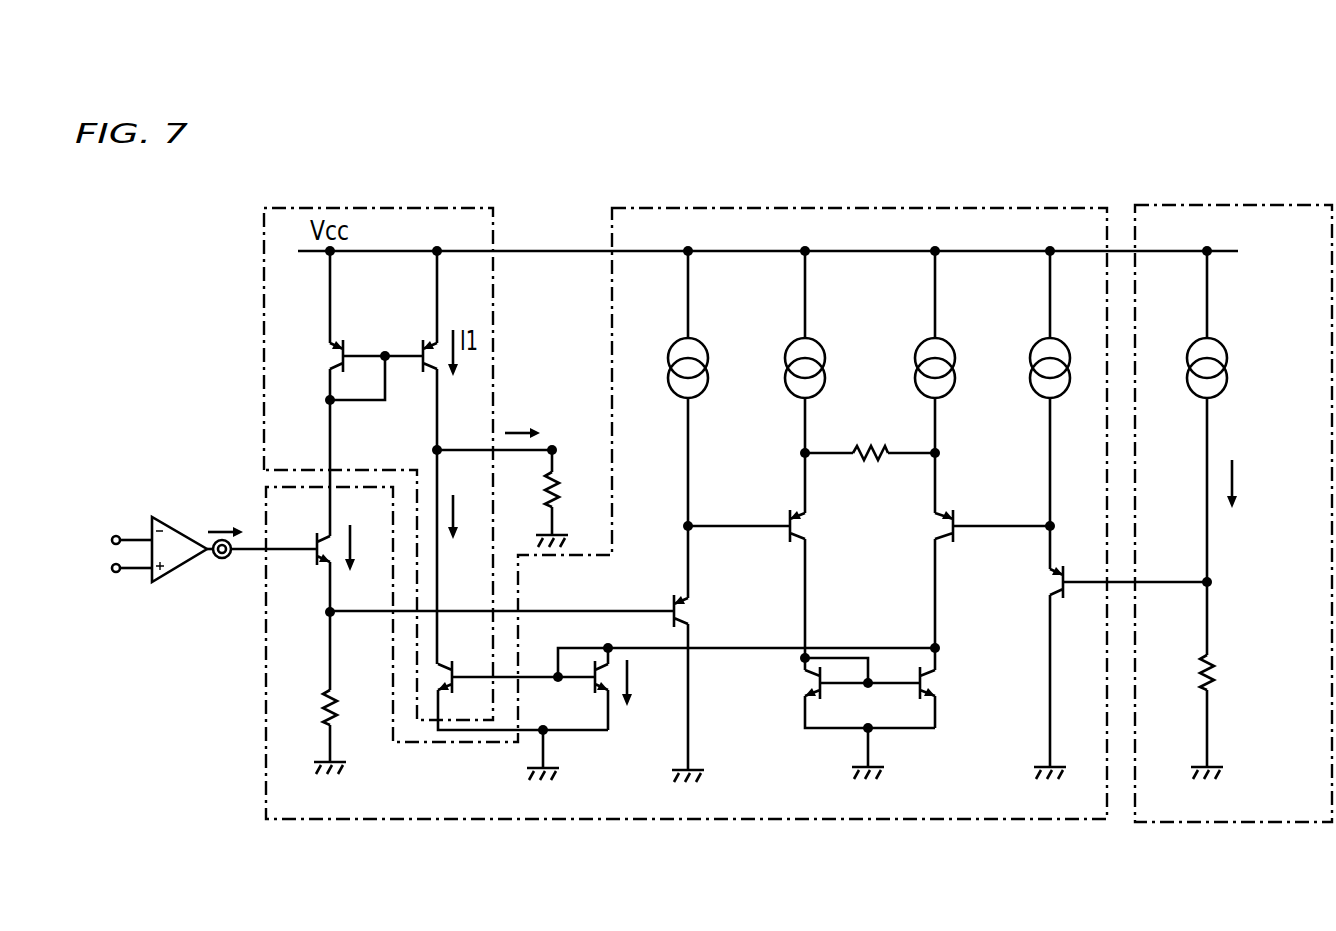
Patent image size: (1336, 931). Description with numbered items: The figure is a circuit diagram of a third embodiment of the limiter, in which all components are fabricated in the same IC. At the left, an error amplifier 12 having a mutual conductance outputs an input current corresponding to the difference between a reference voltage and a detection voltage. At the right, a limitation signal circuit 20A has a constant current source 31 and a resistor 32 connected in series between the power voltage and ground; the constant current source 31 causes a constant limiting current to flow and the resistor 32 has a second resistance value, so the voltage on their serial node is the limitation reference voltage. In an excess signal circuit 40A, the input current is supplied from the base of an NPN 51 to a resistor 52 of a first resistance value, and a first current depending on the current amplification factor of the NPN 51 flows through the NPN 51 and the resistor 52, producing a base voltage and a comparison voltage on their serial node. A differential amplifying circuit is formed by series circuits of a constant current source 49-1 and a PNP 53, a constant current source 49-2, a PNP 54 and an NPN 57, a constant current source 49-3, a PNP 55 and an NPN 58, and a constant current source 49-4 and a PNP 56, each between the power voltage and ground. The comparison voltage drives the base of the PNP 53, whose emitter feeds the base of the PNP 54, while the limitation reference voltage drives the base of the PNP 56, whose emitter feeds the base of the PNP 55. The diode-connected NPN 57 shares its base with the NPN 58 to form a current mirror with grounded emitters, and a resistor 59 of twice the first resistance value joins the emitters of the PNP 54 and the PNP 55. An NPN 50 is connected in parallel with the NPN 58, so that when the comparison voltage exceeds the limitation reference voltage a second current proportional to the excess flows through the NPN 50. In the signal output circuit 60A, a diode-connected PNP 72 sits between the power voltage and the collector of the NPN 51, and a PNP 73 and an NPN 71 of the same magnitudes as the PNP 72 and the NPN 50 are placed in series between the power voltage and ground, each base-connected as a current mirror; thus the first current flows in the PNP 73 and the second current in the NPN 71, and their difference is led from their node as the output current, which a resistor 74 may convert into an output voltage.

The error amplifier 12 is at (165, 527).
The limitation signal circuit 20A is at (1243, 205).
The constant current source 31 is at (1222, 343).
The resistor 32 is at (1214, 674).
The excess signal circuit 40A is at (880, 208).
The constant current source 49-1 is at (702, 343).
The constant current source 49-2 is at (818, 343).
The constant current source 49-3 is at (948, 343).
The constant current source 49-4 is at (1060, 343).
The NPN 50 is at (595, 690).
The NPN 51 is at (317, 535).
The resistor 52 is at (336, 708).
The PNP 53 is at (674, 618).
The PNP 54 is at (790, 543).
The PNP 55 is at (953, 543).
The PNP 56 is at (1063, 598).
The NPN 57 is at (818, 694).
The NPN 58 is at (935, 693).
The resistor 59 is at (853, 448).
The signal output circuit 60A is at (383, 208).
The NPN 71 is at (452, 664).
The PNP 72 is at (343, 361).
The PNP 73 is at (423, 372).
The resistor 74 is at (552, 476).